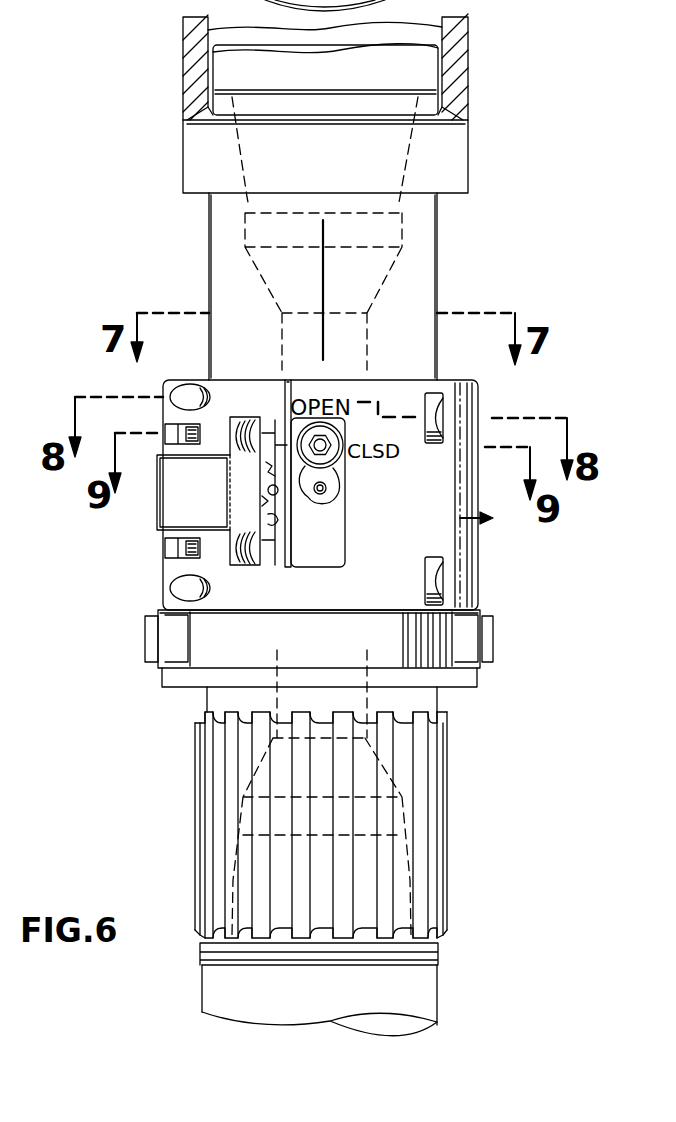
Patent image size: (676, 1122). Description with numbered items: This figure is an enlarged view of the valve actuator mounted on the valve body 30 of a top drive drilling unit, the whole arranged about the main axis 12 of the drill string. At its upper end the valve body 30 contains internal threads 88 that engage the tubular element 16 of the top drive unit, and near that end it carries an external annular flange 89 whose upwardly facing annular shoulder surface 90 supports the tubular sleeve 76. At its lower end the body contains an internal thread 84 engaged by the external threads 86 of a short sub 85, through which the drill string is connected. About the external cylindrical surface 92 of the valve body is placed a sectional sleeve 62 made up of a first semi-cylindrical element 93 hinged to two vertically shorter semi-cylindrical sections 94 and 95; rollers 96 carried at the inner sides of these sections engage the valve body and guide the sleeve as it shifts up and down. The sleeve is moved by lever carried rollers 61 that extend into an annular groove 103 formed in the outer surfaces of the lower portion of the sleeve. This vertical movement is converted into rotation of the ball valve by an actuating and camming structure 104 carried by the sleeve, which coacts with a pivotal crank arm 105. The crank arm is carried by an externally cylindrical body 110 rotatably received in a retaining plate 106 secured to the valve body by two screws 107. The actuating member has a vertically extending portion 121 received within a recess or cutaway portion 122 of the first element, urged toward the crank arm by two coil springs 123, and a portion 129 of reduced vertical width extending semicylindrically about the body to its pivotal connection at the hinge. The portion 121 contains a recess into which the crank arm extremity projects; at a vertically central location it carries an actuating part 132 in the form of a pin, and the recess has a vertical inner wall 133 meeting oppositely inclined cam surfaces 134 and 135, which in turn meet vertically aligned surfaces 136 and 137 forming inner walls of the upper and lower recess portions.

The axis 12 is at (327, 277).
The tubular element 16 is at (222, 64).
The valve body 30 is at (438, 288).
The lever carried rollers 61 is at (490, 655).
The sleeve 62 is at (490, 520).
The tubular sleeve 76 is at (468, 37).
The internal thread 84 is at (400, 848).
The sub 85 is at (438, 996).
The external threads 86 is at (410, 912).
The internal threads 88 is at (253, 162).
The external annular flange 89 is at (468, 158).
The annular shoulder surface 90 is at (468, 108).
The external cylindrical surface 92 is at (422, 252).
The first semi-cylindrical element 93 is at (470, 395).
The semi-cylindrical section 94 is at (192, 382).
The semi-cylindrical section 95 is at (170, 590).
The rollers 96 is at (433, 402).
The annular groove 103 is at (456, 635).
The actuating and camming structure 104 is at (157, 516).
The crank arm 105 is at (315, 478).
The retaining plate 106 is at (318, 507).
The screws 107 is at (327, 490).
The externally cylindrical body 110 is at (387, 417).
The vertically extending portion 121 is at (275, 537).
The recess or cutaway portion 122 is at (325, 575).
The coil springs 123 is at (250, 417).
The portion of reduced vertical width 129 is at (160, 490).
The actuating part 132 is at (268, 490).
The inner wall 133 is at (262, 502).
The inclined cam surface 134 is at (265, 469).
The inclined cam surface 135 is at (266, 517).
The vertical surface 136 is at (284, 392).
The vertical surface 137 is at (268, 550).